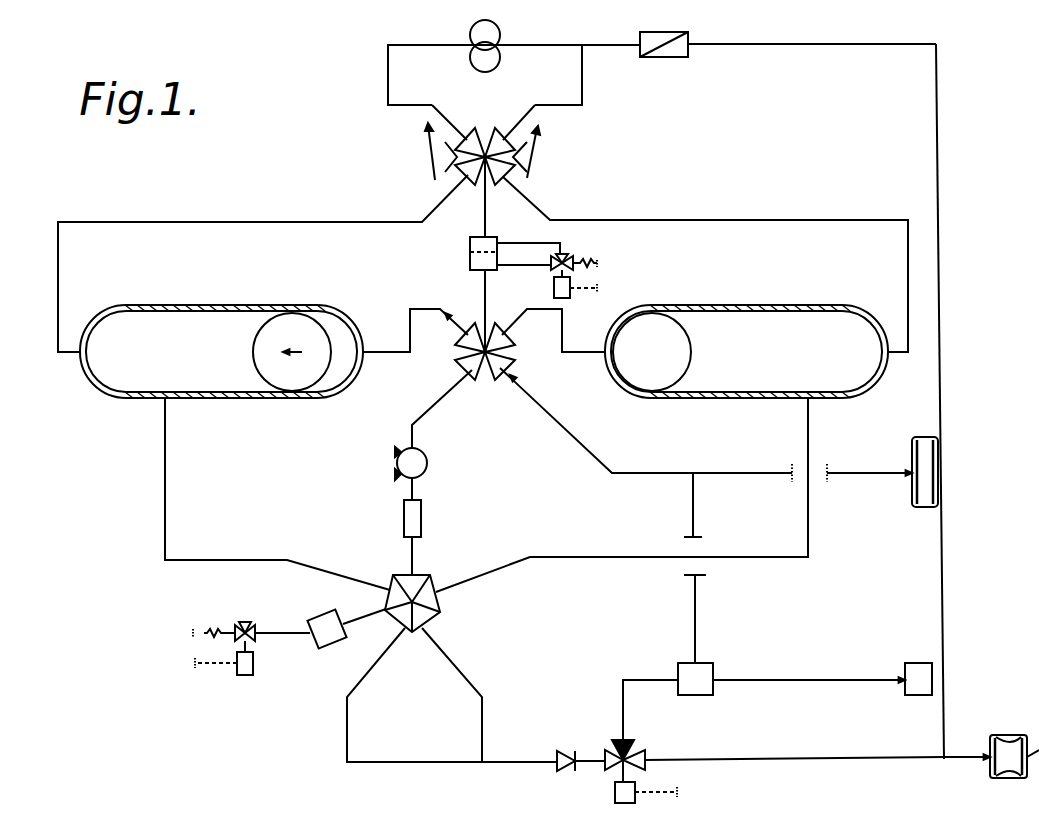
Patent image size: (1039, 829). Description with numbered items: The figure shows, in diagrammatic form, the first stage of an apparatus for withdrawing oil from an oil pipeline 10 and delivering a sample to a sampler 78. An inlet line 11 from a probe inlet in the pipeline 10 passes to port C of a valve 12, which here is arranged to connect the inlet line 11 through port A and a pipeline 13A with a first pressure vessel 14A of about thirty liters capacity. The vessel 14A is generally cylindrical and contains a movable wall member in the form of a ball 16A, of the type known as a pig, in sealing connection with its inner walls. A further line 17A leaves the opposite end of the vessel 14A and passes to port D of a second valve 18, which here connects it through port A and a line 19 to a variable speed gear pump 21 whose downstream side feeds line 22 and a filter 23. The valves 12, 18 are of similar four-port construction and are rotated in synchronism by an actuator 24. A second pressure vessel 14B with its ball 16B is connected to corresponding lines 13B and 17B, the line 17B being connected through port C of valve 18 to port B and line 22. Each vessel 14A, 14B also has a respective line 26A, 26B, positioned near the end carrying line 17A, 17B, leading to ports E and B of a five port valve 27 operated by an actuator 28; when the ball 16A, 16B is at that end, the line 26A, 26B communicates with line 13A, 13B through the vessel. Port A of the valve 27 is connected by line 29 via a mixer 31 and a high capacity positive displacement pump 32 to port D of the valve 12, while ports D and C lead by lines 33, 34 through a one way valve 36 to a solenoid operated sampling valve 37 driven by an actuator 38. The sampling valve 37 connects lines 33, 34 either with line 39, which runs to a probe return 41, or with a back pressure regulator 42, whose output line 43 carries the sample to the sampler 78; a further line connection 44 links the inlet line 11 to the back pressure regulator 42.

The oil pipeline 10 is at (932, 465).
The inlet line 11 is at (748, 470).
The valve 12 is at (505, 355).
The pipeline 13A is at (387, 357).
The line 13B is at (582, 350).
The first pressure vessel 14A is at (323, 307).
The second pressure vessel 14B is at (762, 307).
The ball 16A is at (291, 327).
The ball 16B is at (652, 323).
The line 17A is at (178, 222).
The line 17B is at (813, 220).
The second valve 18 is at (443, 165).
The line 19 is at (388, 84).
The variable speed gear pump 21 is at (473, 34).
The line 22 is at (615, 47).
The filter 23 is at (680, 57).
The actuator 24 is at (470, 269).
The line 26A is at (165, 478).
The line 26B is at (810, 537).
The five port valve 27 is at (440, 598).
The actuator 28 is at (327, 640).
The line 29 is at (413, 553).
The mixer 31 is at (404, 518).
The high capacity positive displacement pump 32 is at (397, 470).
The line 33 is at (347, 727).
The line 34 is at (482, 682).
The one way valve 36 is at (560, 750).
The sampling valve 37 is at (645, 753).
The actuator 38 is at (615, 788).
The line 39 is at (822, 755).
The probe return 41 is at (975, 753).
The back pressure regulator 42 is at (713, 670).
The line 43 is at (803, 677).
The line connection 44 is at (697, 590).
The sampler 78 is at (913, 663).